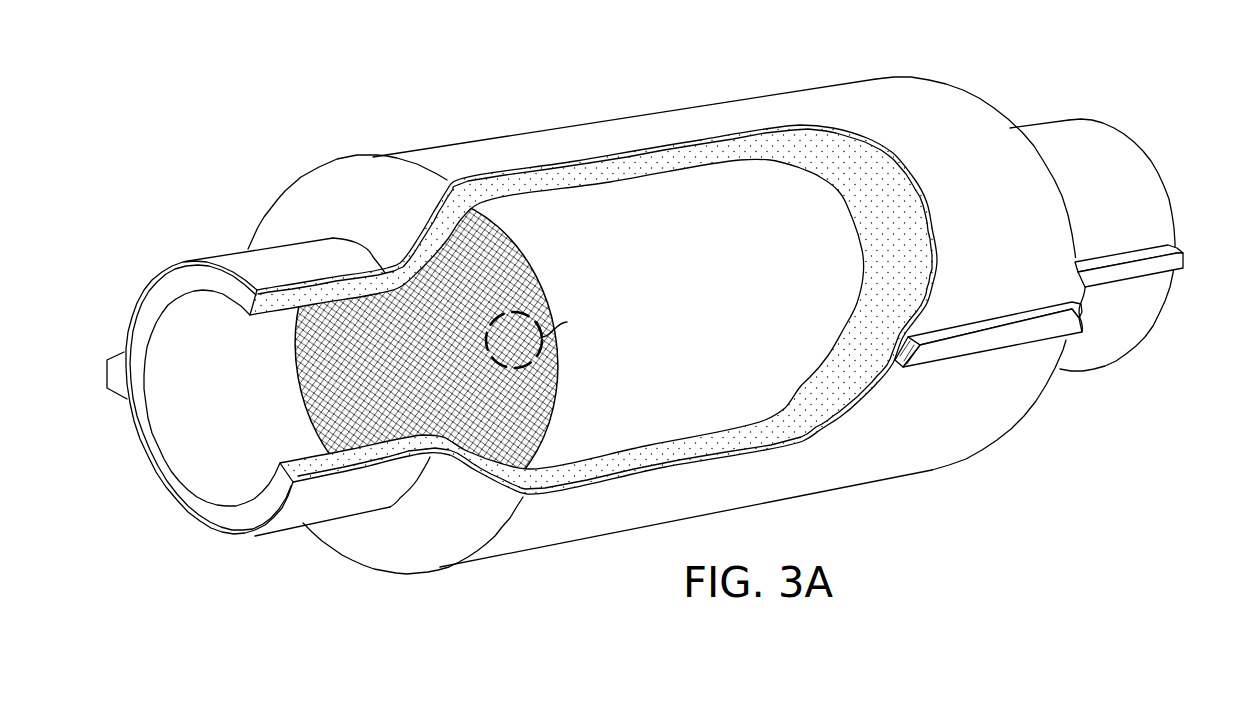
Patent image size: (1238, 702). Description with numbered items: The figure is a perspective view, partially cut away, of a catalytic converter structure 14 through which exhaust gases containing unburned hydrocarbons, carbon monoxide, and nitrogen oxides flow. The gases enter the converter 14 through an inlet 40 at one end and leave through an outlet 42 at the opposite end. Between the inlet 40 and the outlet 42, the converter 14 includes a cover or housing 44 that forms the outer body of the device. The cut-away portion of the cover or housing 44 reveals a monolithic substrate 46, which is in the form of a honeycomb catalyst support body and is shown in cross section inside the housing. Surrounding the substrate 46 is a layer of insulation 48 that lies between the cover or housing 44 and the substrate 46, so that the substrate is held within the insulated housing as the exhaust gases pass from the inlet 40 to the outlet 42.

The catalytic converter structure 14 is at (648, 316).
The inlet 40 is at (187, 451).
The outlet 42 is at (1143, 178).
The cover or housing 44 is at (977, 110).
The monolithic substrate 46 is at (340, 346).
The layer of insulation 48 is at (848, 185).